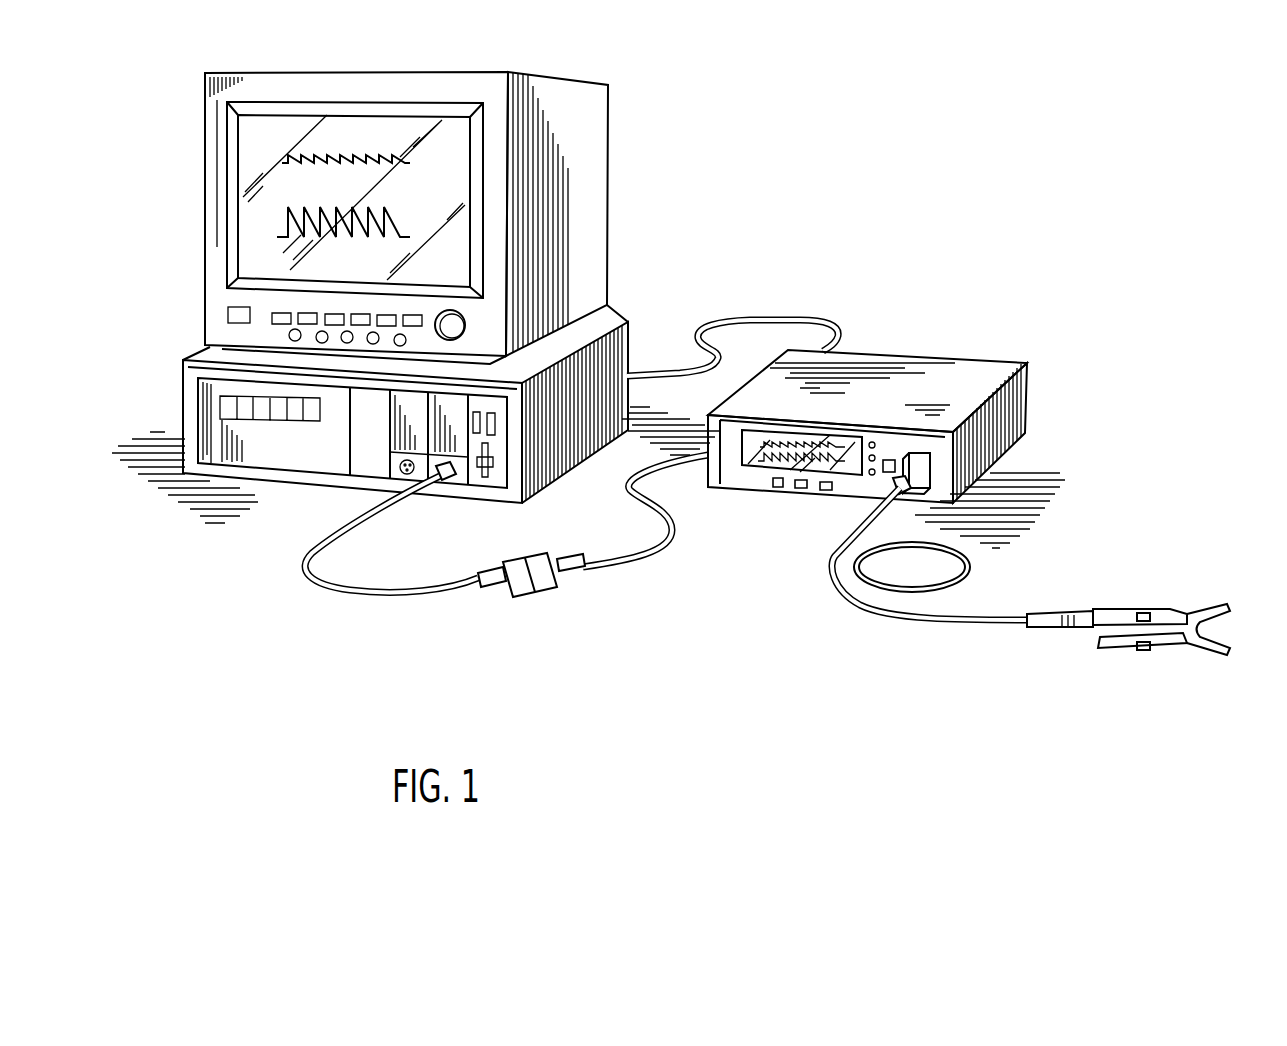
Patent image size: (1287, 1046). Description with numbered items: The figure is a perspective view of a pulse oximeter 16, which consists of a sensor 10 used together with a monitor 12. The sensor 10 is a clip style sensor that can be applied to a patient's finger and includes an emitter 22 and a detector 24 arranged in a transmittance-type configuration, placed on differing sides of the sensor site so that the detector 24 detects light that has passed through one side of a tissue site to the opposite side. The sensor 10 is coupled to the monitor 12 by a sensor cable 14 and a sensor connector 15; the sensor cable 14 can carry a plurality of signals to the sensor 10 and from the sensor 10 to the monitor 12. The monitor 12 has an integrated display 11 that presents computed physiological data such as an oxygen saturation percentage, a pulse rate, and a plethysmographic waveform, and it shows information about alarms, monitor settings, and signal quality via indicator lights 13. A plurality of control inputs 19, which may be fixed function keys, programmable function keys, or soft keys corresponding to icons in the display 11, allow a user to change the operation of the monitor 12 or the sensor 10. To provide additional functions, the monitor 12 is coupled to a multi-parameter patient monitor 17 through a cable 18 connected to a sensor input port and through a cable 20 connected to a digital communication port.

The sensor 10 is at (1194, 658).
The display 11 is at (740, 468).
The monitor 12 is at (930, 358).
The indicator lights 13 is at (873, 478).
The sensor cable 14 is at (857, 607).
The sensor connector 15 is at (917, 453).
The pulse oximeter 16 is at (969, 266).
The multi-parameter patient monitor 17 is at (558, 83).
The cable 18 is at (620, 562).
The control inputs 19 is at (822, 490).
The cable 20 is at (778, 318).
The emitter 22 is at (1143, 614).
The detector 24 is at (1143, 651).